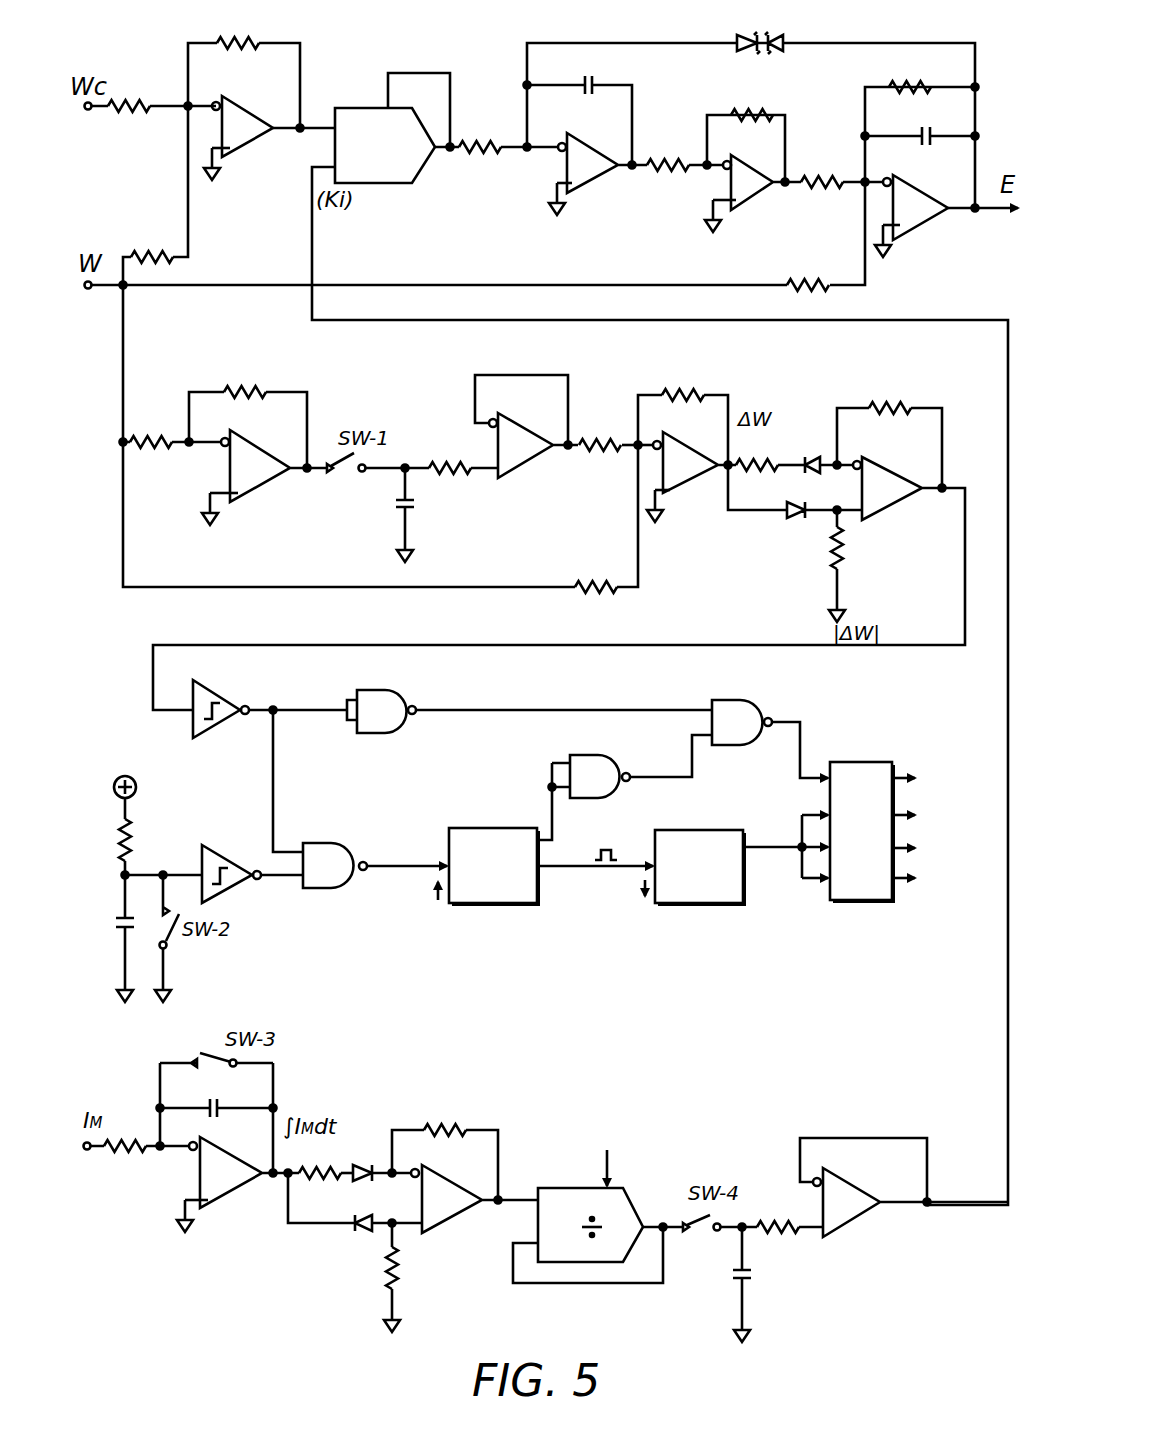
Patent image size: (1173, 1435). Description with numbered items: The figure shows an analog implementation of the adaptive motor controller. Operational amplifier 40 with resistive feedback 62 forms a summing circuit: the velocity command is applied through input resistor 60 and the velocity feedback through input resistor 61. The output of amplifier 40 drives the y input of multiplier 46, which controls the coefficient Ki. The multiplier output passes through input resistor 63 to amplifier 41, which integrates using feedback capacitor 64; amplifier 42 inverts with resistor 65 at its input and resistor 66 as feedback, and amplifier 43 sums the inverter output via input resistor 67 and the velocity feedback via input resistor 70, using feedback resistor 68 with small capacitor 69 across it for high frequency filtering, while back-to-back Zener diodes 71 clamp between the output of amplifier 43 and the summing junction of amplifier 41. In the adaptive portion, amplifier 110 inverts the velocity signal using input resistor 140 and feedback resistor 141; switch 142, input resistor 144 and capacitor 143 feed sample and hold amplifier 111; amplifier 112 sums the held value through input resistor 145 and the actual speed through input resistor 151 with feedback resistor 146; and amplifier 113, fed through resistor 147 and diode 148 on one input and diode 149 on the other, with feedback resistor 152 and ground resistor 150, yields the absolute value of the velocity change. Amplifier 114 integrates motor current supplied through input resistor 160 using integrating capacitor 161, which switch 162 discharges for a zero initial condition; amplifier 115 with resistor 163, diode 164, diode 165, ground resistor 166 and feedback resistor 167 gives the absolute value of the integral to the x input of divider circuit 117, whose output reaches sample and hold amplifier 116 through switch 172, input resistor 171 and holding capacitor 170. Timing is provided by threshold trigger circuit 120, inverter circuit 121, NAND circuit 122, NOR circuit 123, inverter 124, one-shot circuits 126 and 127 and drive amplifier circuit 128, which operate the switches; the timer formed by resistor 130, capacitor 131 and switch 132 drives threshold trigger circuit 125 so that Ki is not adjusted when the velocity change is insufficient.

The operational amplifier 40 is at (250, 142).
The operational amplifier 41 is at (594, 180).
The operational amplifier 42 is at (756, 196).
The operational amplifier 43 is at (930, 226).
The multiplier 46 is at (364, 106).
The input resistor 60 is at (138, 118).
The input resistor 61 is at (167, 254).
The resistive feedback 62 is at (236, 50).
The input resistor 63 is at (498, 154).
The capacitor 64 is at (591, 70).
The resistor 65 is at (684, 173).
The resistor 66 is at (734, 110).
The input resistor 67 is at (836, 174).
The resistive feedback 68 is at (914, 80).
The capacitor 69 is at (919, 126).
The input resistor 70 is at (826, 280).
The back-to-back Zener diodes 71 is at (764, 60).
The amplifier 110 is at (264, 490).
The amplifier 111 is at (530, 462).
The amplifier 112 is at (690, 478).
The amplifier 113 is at (905, 474).
The amplifier 114 is at (238, 1186).
The amplifier 115 is at (458, 1212).
The amplifier 116 is at (856, 1232).
The divider circuit 117 is at (586, 1186).
The threshold trigger circuit 120 is at (228, 690).
The inverter circuit 121 is at (386, 688).
The NAND circuit 122 is at (738, 698).
The NOR circuit 123 is at (338, 842).
The inverter 124 is at (608, 740).
The Schmitt trigger 125 is at (230, 844).
The one-shot circuit 126 is at (494, 912).
The one-shot circuit 127 is at (716, 912).
The drive amplifier circuit 128 is at (882, 908).
The resistor 130 is at (132, 824).
The capacitor 131 is at (109, 926).
The switch 132 is at (170, 950).
The input resistor 140 is at (150, 450).
The resistor 141 is at (260, 390).
The switch 142 is at (337, 476).
The capacitor 143 is at (416, 505).
The input resistor 144 is at (460, 460).
The input resistor 145 is at (616, 437).
The resistor 146 is at (682, 384).
The resistor 147 is at (770, 474).
The diode 148 is at (812, 454).
The diode 149 is at (793, 524).
The resistor 150 is at (844, 562).
The input resistor 151 is at (590, 580).
The resistor 152 is at (877, 398).
The input resistor 160 is at (135, 1156).
The integrating capacitor 161 is at (214, 1118).
The switch 162 is at (194, 1048).
The resistor 163 is at (330, 1180).
The diode 164 is at (363, 1162).
The diode 165 is at (360, 1234).
The resistor 166 is at (384, 1284).
The resistor 167 is at (448, 1124).
The capacitor 170 is at (755, 1276).
The input resistor 171 is at (802, 1220).
The switch 172 is at (694, 1232).